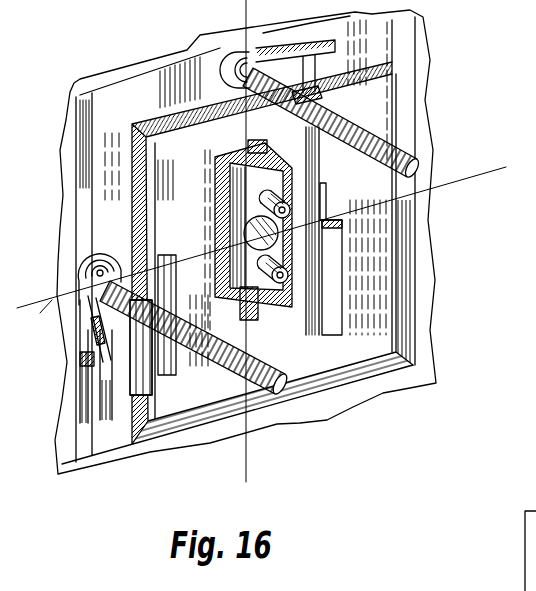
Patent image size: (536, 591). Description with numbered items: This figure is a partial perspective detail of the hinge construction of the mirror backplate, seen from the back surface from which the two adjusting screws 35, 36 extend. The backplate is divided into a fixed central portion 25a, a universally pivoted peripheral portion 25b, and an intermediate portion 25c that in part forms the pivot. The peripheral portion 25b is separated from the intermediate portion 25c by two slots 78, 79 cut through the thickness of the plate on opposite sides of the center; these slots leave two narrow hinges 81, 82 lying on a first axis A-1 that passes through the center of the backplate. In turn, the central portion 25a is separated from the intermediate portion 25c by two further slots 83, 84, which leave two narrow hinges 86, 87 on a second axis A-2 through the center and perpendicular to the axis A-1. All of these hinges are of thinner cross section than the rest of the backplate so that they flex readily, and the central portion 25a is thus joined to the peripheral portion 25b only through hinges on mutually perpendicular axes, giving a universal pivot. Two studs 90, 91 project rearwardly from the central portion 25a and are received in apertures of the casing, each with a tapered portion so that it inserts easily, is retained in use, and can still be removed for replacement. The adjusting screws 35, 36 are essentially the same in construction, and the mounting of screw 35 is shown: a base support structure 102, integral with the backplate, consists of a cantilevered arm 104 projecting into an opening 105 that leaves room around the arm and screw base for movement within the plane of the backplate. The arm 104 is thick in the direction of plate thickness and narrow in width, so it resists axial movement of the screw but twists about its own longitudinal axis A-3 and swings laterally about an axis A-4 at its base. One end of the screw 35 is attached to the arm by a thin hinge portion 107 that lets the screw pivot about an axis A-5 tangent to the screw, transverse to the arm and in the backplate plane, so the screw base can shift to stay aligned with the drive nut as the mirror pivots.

The universally pivoted portion 25b is at (152, 80).
The slot 78 is at (148, 122).
The slot 79 is at (165, 380).
The hinge 81 is at (168, 286).
The adjusting screw 36 is at (352, 122).
The adjusting screw 35 is at (207, 372).
The intermediate portion 25c is at (303, 155).
The slot 83 is at (215, 178).
The fixed central portion 25a is at (222, 212).
The hinge 86 is at (249, 145).
The hinge 87 is at (268, 307).
The stud 90 is at (296, 210).
The stud 91 is at (286, 297).
The hinge 82 is at (322, 196).
The slot 84 is at (286, 262).
The opening 105 is at (91, 245).
The base support structure 102 is at (72, 263).
The thin hinge portion 107 is at (83, 288).
The cantilevered arm 104 is at (97, 342).
The first axis A-1 is at (462, 182).
The second axis A-2 is at (246, 14).
The longitudinal axis of the arm A-3 is at (108, 205).
The axis at the base of the arm A-4 is at (145, 425).
The pivot axis of the screw A-5 is at (67, 347).